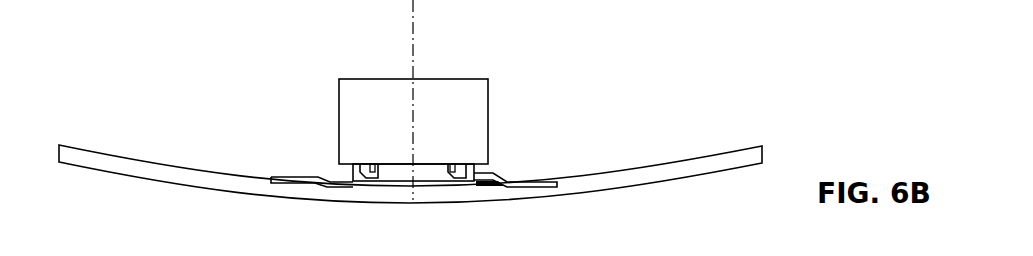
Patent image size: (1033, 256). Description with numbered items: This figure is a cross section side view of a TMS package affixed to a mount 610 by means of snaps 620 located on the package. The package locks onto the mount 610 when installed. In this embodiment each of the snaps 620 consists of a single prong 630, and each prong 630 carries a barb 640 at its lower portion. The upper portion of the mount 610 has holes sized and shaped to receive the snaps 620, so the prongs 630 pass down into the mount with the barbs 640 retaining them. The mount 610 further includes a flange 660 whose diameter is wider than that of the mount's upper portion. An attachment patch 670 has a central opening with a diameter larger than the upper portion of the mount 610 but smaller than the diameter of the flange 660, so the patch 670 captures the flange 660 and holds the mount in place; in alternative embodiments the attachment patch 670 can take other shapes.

The mount 610 is at (427, 163).
The snaps 620 is at (449, 163).
The prong 630 is at (375, 155).
The barb 640 is at (457, 163).
The flange 660 is at (495, 181).
The attachment patch 670 is at (300, 167).